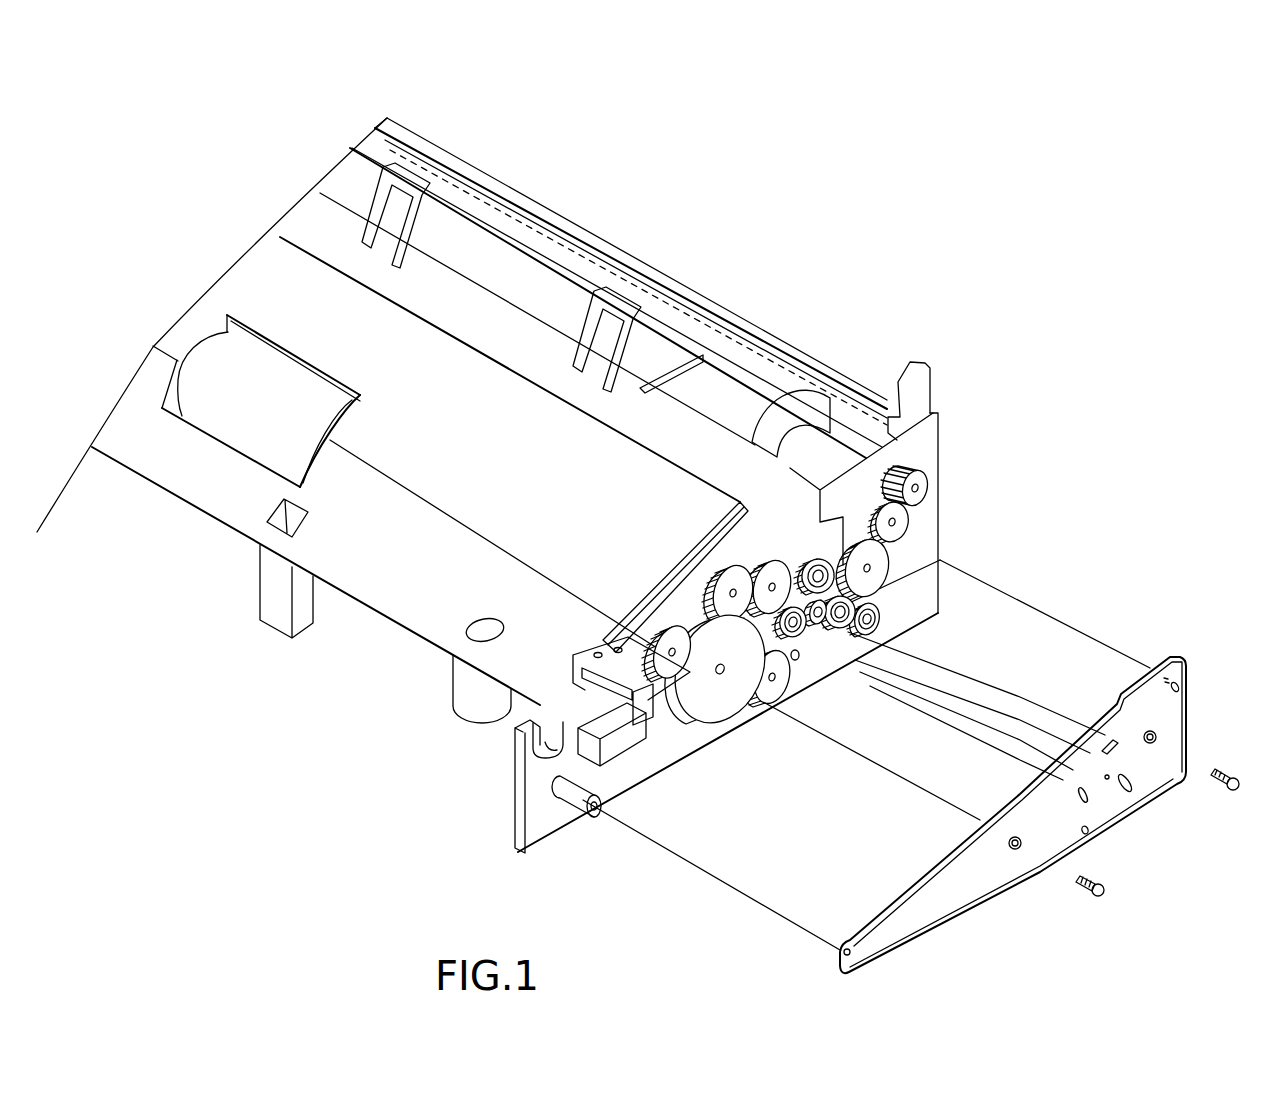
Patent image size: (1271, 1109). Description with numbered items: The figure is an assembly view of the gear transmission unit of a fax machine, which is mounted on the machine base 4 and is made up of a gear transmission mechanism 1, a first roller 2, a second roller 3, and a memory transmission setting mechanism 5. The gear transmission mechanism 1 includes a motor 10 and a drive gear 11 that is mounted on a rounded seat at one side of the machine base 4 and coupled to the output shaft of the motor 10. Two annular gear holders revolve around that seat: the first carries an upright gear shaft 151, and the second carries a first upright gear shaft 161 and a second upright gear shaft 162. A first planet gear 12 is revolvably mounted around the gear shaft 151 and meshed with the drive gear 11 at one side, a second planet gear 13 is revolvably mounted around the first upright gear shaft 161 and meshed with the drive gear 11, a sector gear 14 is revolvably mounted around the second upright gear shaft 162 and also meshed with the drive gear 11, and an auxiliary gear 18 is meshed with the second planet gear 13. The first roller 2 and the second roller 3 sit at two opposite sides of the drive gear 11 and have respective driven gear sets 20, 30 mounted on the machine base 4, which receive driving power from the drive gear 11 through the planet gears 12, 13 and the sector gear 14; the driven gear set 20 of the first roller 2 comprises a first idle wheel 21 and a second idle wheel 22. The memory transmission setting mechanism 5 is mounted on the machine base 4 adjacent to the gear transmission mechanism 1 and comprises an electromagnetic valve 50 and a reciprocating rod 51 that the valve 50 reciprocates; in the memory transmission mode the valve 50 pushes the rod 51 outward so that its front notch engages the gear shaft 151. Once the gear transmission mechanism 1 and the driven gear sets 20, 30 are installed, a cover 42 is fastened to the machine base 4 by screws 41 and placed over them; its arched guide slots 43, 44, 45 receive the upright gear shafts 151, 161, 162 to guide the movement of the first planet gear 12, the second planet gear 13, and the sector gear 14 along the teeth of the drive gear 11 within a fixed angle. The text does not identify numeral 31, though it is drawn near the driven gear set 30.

The gear transmission mechanism 1 is at (903, 673).
The first roller 2 is at (257, 417).
The second roller 3 is at (720, 345).
The machine base 4 is at (540, 820).
The memory transmission setting mechanism 5 is at (636, 775).
The motor 10 is at (808, 450).
The drive gear 11 is at (828, 640).
The first planet gear 12 is at (796, 663).
The second planet gear 13 is at (852, 652).
The sector gear 14 is at (812, 562).
The auxiliary gear 18 is at (880, 621).
The driven gear set 20 is at (702, 744).
The first idle wheel 21 is at (768, 562).
The second idle wheel 22 is at (763, 706).
The driven gear set 30 is at (938, 487).
The gear 31 is at (895, 520).
The screws 41 is at (1103, 895).
The cover 42 is at (973, 885).
The arched guide slot 43 is at (1090, 802).
The arched guide slot 44 is at (1130, 790).
The arched guide slot 45 is at (1108, 740).
The electromagnetic valve 50 is at (621, 745).
The reciprocating rod 51 is at (660, 708).
The upright gear shaft 151 is at (808, 648).
The first upright gear shaft 161 is at (852, 602).
The second upright gear shaft 162 is at (800, 553).